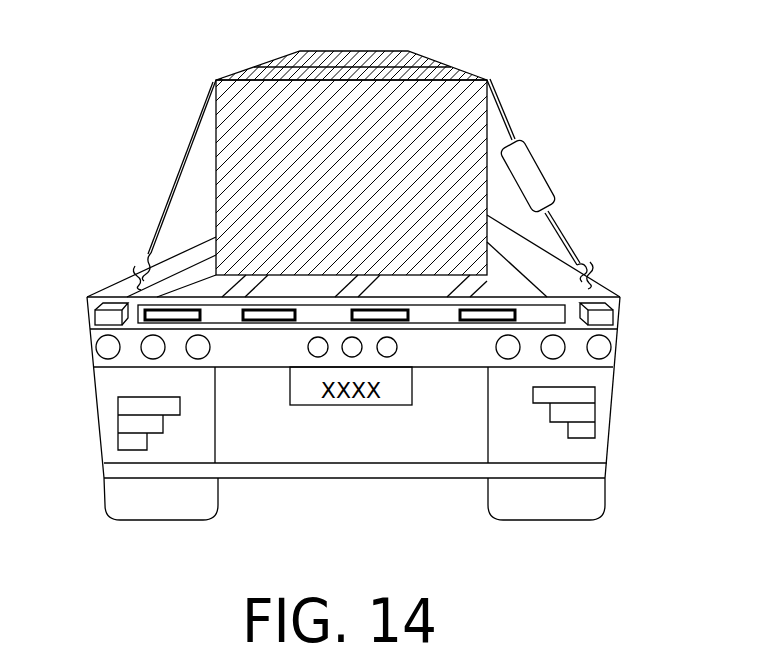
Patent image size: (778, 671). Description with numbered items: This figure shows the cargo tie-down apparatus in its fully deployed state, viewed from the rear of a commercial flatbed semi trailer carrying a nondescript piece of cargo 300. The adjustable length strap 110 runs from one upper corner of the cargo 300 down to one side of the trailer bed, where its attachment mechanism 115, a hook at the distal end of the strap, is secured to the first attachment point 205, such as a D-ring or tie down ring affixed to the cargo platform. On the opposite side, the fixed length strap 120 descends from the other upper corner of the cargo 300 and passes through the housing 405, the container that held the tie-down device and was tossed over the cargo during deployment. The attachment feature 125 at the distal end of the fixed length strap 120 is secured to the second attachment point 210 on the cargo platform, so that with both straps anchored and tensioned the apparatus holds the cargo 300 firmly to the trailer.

The cargo 300 is at (353, 52).
The adjustable length strap 110 is at (183, 163).
The attachment mechanism 115 is at (148, 260).
The first attachment point 205 is at (133, 277).
The fixed length strap 120 is at (557, 220).
The housing 405 is at (517, 170).
The attachment feature 125 is at (575, 257).
The second attachment point 210 is at (587, 267).